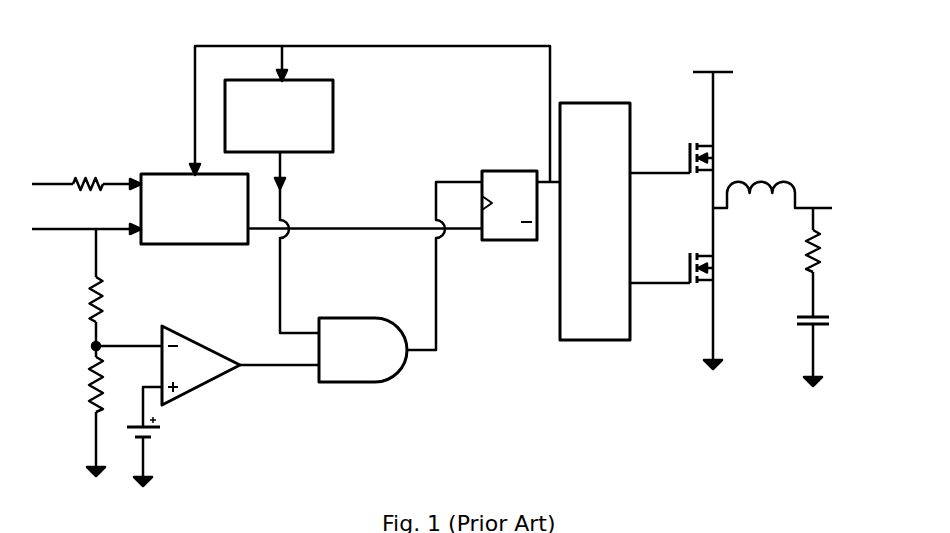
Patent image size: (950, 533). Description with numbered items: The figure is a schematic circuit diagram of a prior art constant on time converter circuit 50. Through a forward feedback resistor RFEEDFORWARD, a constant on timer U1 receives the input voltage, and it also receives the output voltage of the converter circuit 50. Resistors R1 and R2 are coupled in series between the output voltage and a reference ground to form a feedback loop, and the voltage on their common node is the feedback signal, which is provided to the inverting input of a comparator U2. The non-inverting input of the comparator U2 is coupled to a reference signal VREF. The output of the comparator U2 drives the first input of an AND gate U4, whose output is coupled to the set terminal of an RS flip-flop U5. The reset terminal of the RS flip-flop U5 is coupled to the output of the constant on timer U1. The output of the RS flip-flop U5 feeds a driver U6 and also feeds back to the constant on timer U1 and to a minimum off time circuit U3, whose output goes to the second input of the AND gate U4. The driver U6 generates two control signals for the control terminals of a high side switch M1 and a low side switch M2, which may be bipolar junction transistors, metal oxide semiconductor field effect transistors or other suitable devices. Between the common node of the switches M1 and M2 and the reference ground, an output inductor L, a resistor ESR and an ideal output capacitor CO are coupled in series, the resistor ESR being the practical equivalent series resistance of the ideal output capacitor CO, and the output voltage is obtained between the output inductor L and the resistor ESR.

The constant on time converter circuit 50 is at (120, 65).
The constant on timer U1 is at (194, 209).
The comparator U2 is at (201, 365).
The minimum off time circuit U3 is at (279, 116).
The AND gate U4 is at (363, 350).
The RS flip-flop U5 is at (509, 215).
The driver U6 is at (595, 221).
The high side switch M1 is at (716, 158).
The low side switch M2 is at (716, 268).
The output inductor L is at (761, 176).
The resistor ESR is at (793, 273).
The ideal output capacitor CO is at (801, 349).
The resistor R1 is at (81, 299).
The resistor R2 is at (81, 384).
The reference signal VREF is at (165, 451).
The forward feedback resistor RFEEDFORWARD is at (84, 173).